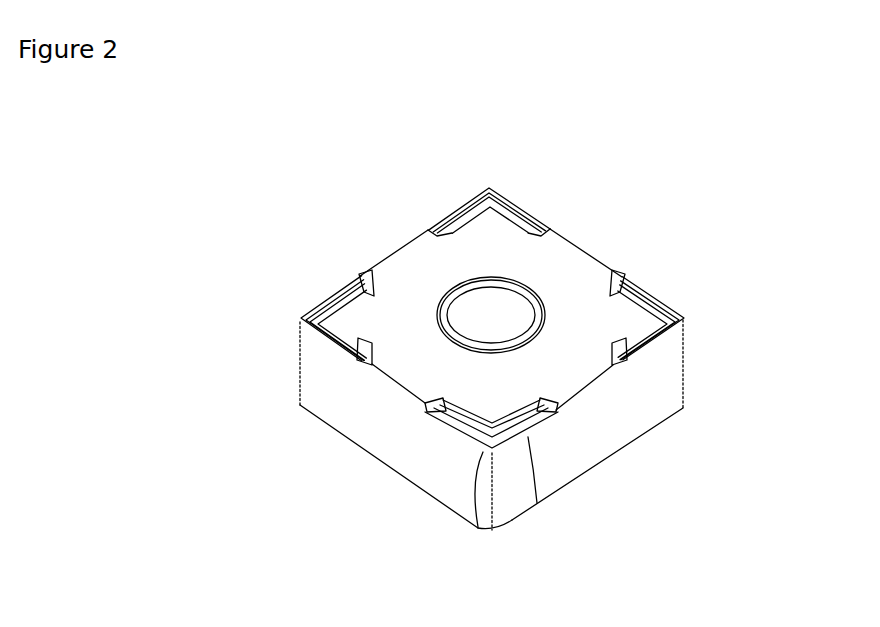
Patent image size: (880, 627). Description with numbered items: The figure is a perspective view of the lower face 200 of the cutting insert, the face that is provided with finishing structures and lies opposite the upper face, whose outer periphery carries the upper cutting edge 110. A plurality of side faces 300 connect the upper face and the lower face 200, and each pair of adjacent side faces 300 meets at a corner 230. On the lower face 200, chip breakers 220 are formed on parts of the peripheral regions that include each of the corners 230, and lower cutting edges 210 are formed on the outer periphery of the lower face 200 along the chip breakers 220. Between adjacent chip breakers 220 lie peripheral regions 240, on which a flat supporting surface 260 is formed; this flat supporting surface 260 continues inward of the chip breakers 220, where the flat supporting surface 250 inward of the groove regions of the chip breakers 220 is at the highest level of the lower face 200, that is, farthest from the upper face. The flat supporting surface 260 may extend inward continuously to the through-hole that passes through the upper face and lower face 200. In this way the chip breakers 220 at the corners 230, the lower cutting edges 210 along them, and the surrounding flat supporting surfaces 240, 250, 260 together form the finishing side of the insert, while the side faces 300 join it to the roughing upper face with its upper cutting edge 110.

The upper cutting edge 110 is at (392, 470).
The lower face 200 is at (420, 282).
The lower cutting edge 210 is at (537, 503).
The chip breaker 220 is at (455, 435).
The corner 230 is at (489, 188).
The peripheral region 240 is at (393, 377).
The flat supporting surface 250 is at (327, 348).
The flat supporting surface 260 is at (207, 356).
The side face 300 is at (375, 437).